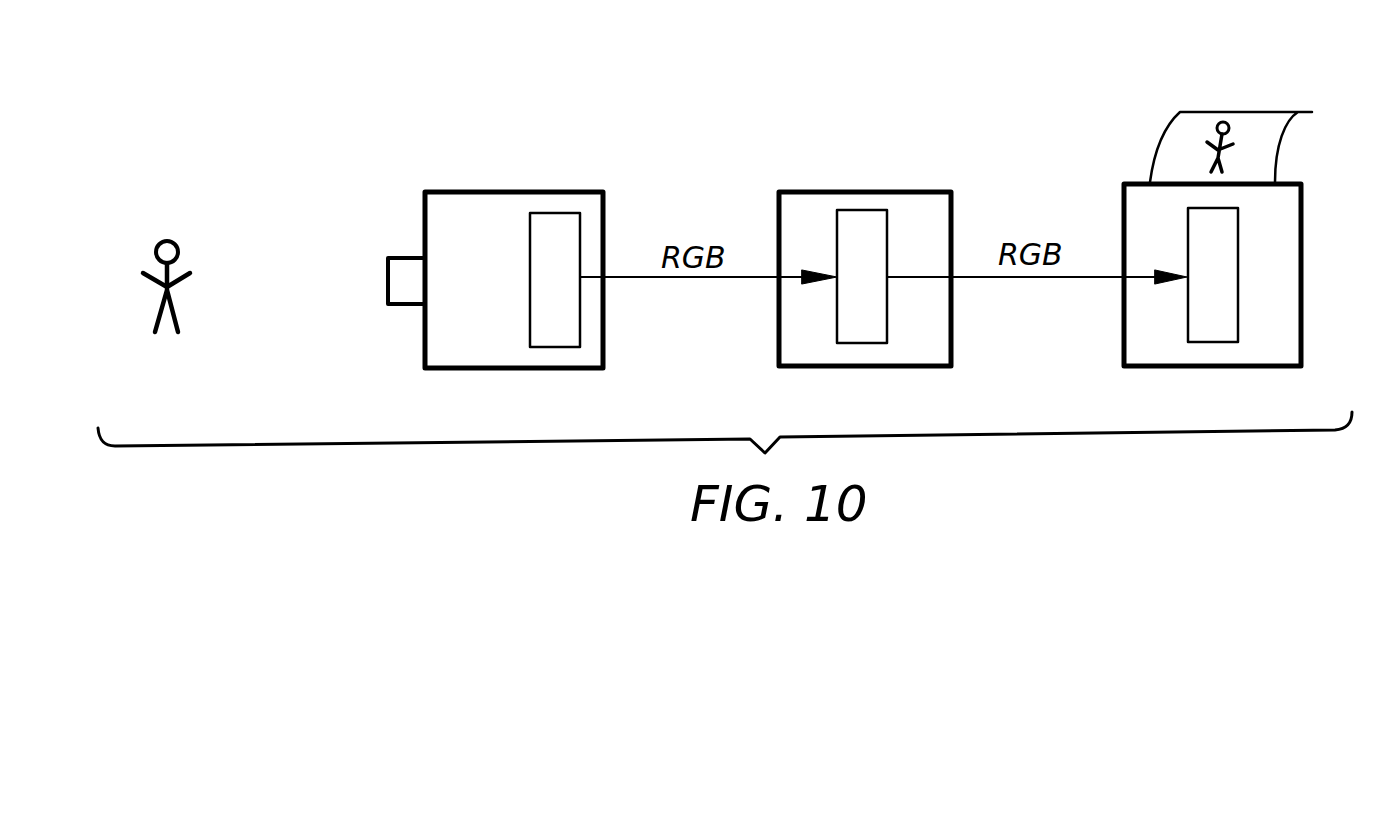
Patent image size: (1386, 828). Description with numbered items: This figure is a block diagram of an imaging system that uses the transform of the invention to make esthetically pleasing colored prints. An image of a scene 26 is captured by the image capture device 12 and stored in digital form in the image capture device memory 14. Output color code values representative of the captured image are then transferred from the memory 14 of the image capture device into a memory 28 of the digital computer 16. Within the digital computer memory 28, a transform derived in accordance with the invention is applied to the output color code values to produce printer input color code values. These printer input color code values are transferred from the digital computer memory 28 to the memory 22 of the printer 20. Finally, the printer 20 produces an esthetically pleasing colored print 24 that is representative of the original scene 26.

The image capture device 12 is at (470, 190).
The image capture device memory 14 is at (558, 213).
The digital computer 16 is at (812, 190).
The printer 20 is at (1290, 182).
The printer memory 22 is at (1215, 342).
The colored print 24 is at (1253, 110).
The scene 26 is at (184, 252).
The digital computer memory 28 is at (870, 210).